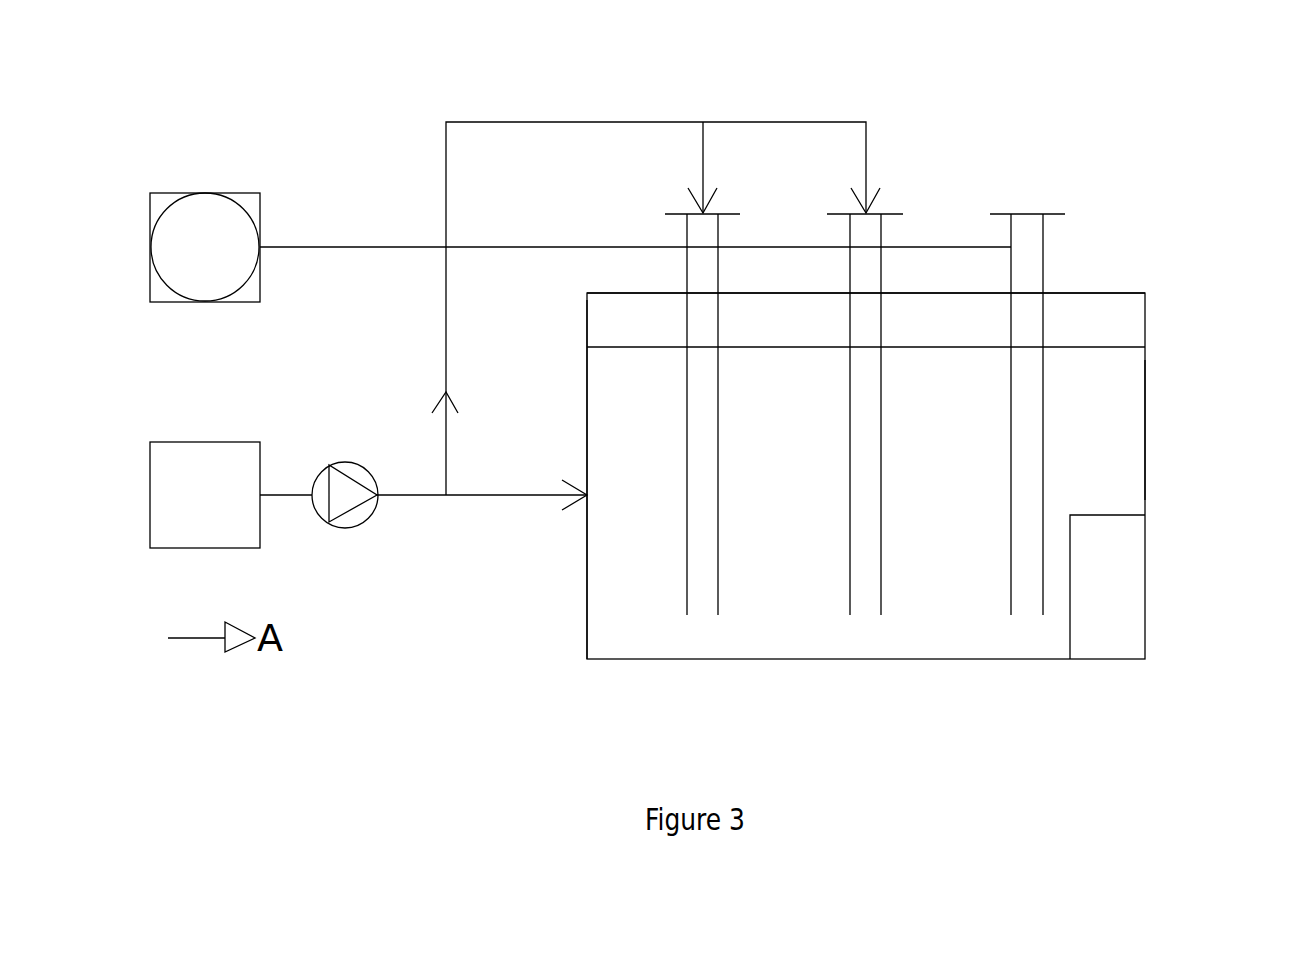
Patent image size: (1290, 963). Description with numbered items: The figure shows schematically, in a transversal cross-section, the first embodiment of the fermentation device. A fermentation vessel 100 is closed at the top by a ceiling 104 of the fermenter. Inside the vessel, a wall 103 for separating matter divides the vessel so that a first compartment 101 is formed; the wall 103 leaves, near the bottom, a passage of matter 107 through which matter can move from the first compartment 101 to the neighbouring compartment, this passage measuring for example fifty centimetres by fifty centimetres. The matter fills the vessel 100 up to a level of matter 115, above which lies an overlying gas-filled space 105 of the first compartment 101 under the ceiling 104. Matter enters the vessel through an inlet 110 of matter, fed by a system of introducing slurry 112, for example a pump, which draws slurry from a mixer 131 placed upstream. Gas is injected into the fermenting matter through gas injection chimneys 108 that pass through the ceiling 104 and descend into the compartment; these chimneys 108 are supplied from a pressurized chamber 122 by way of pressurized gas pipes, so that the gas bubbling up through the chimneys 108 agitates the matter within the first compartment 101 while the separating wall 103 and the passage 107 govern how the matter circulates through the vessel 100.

The fermentation vessel 100 is at (918, 660).
The first compartment 101 is at (617, 628).
The wall for separating matter 103 is at (1088, 450).
The ceiling of the fermenter 104 is at (953, 292).
The overlying gas-filled space of the first compartment 105 is at (1098, 303).
The passage of matter 107 is at (1120, 550).
The gas injection chimneys 108 is at (710, 220).
The inlet of matter 110 is at (578, 490).
The system of introducing slurry 112 is at (348, 500).
The level of matter 115 is at (1110, 348).
The pressurized chamber 122 is at (228, 223).
The mixer 131 is at (170, 517).